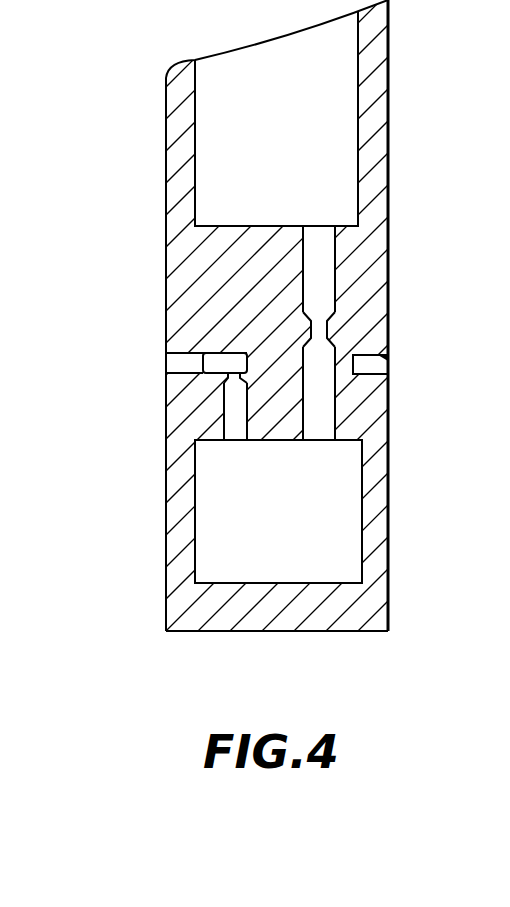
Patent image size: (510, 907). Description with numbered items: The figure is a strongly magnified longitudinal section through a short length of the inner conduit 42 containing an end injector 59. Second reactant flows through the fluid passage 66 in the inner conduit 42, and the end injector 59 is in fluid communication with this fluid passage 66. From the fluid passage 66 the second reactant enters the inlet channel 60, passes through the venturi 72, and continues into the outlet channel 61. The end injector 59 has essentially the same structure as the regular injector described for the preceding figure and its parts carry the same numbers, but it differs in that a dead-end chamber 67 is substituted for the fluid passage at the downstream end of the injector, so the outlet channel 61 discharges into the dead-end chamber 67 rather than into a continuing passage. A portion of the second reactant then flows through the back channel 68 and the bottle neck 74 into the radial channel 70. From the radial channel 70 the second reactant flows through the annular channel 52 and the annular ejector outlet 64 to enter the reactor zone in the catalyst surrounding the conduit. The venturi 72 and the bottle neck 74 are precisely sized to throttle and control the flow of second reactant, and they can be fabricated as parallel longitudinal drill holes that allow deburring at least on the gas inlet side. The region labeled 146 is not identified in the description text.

The inner conduit 42 is at (390, 127).
The fluid passage 66 is at (261, 68).
The chamber floor 146 is at (330, 203).
The inlet channel 60 is at (336, 256).
The venturi 72 is at (330, 331).
The outlet channel 61 is at (336, 414).
The end injector 59 is at (389, 369).
The dead-end chamber 67 is at (335, 512).
The radial channel 70 is at (228, 352).
The annular ejector outlet 64 is at (168, 368).
The annular channel 52 is at (190, 357).
The bottle neck 74 is at (225, 376).
The back channel 68 is at (223, 412).